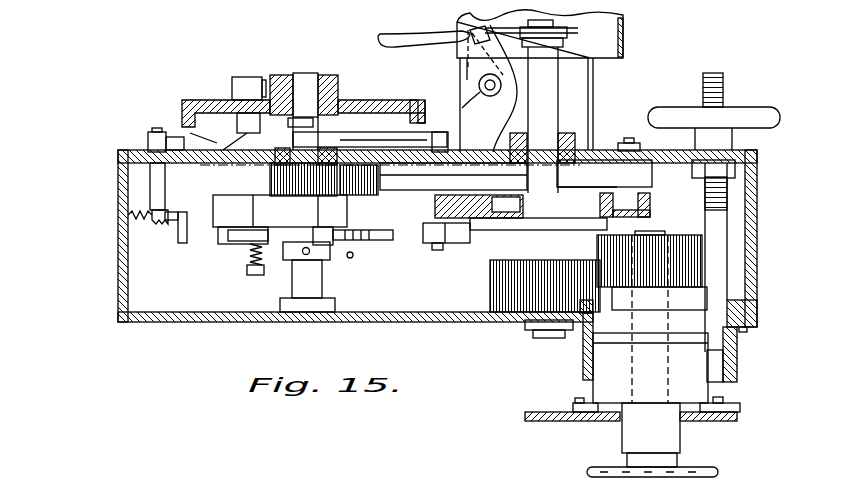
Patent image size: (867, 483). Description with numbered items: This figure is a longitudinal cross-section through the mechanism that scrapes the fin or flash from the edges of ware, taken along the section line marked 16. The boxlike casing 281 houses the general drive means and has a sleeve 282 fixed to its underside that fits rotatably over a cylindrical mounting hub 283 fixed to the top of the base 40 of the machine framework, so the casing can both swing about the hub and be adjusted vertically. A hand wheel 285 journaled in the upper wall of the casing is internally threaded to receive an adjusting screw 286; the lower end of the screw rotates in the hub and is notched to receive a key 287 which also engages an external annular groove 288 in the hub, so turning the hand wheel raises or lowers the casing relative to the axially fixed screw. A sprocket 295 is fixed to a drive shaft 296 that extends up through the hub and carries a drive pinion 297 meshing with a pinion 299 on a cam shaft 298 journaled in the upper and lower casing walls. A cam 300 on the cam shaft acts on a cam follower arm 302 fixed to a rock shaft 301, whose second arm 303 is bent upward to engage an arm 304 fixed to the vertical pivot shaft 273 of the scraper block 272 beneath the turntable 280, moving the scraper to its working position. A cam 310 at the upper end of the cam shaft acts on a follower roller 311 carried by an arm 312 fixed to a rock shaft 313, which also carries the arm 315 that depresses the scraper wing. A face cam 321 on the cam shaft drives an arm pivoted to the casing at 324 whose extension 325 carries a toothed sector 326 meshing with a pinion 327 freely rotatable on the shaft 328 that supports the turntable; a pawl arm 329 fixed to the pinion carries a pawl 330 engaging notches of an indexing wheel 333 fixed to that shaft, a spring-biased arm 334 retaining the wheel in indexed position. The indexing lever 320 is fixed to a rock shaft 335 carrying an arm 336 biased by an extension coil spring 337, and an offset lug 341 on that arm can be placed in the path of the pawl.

The section line 16- 16 is at (135, 135).
The base 40 is at (542, 412).
The block 272 is at (236, 88).
The vertical pivot shaft 273 is at (207, 163).
The turntable 280 is at (362, 100).
The casing 281 is at (153, 325).
The sleeve 282 is at (735, 362).
The mounting hub 283 is at (595, 352).
The hand wheel 285 is at (678, 115).
The adjusting screw 286 is at (713, 73).
The key 287 is at (700, 345).
The annular groove 288 is at (620, 345).
The sprocket 295 is at (705, 468).
The drive shaft 296 is at (622, 436).
The drive pinion 297 is at (680, 236).
The cam shaft 298 is at (552, 85).
The pinion 299 is at (492, 312).
The cam 300 is at (492, 228).
The rock shaft 301 is at (433, 252).
The cam follower arm 302 is at (460, 250).
The arm 303 is at (396, 135).
The arm 304 is at (278, 78).
The cam 310 is at (621, 38).
The follower roller 311 is at (472, 38).
The arm 312 is at (479, 83).
The rock shaft 313 is at (470, 100).
The arm 315 is at (385, 42).
The indexing lever 320 is at (176, 138).
The face cam 321 is at (545, 212).
The pivot 324 is at (628, 138).
The extension 325 is at (412, 188).
The toothed sector 326 is at (359, 193).
The pinion 327 is at (270, 178).
The shaft 328 is at (310, 80).
The pawl arm 329 is at (215, 206).
The pawl 330 is at (222, 244).
The indexing wheel 333 is at (248, 262).
The spring-biased arm 334 is at (320, 277).
The rock shaft 335 is at (153, 132).
The arm 336 is at (162, 228).
The extension coil spring 337 is at (130, 222).
The offset lug 341 is at (180, 248).